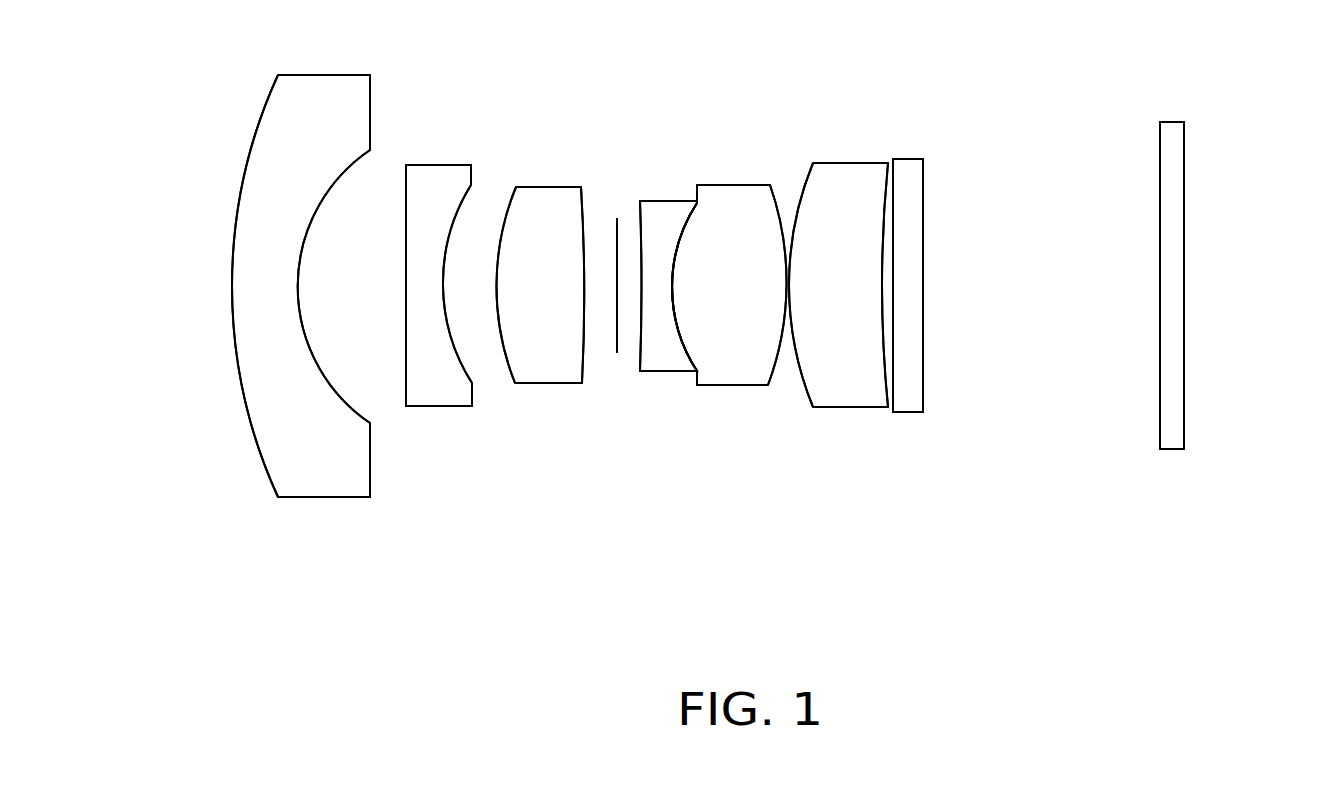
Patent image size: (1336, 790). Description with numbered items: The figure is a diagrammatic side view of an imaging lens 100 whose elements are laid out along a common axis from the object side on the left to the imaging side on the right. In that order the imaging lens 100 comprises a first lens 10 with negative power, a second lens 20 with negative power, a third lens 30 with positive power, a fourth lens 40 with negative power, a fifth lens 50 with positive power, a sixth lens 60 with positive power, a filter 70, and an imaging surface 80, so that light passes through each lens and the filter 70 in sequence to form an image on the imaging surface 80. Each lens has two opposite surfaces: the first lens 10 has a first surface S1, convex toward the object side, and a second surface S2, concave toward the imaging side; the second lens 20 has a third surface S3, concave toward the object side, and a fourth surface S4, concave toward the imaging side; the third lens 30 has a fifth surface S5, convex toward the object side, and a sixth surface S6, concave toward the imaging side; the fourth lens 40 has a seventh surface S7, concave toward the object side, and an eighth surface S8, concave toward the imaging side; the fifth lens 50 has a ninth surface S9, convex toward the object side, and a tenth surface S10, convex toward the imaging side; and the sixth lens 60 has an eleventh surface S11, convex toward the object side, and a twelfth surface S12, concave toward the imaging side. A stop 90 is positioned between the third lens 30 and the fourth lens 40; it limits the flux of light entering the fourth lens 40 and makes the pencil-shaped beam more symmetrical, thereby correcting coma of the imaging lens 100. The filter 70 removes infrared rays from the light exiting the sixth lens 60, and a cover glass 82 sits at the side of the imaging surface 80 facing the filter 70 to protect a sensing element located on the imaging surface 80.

The imaging lens 100 is at (730, 41).
The first lens 10 is at (318, 73).
The second lens 20 is at (432, 165).
The third lens 30 is at (534, 187).
The fourth lens 40 is at (682, 372).
The fifth lens 50 is at (718, 184).
The sixth lens 60 is at (845, 162).
The filter 70 is at (910, 158).
The imaging surface 80 is at (1184, 157).
The cover glass 82 is at (1160, 203).
The stop 90 is at (616, 237).
The first surface S1 is at (240, 380).
The second surface S2 is at (298, 302).
The third surface S3 is at (406, 253).
The fourth surface S4 is at (453, 350).
The fifth surface S5 is at (509, 370).
The sixth surface S6 is at (582, 352).
The seventh surface S7 is at (640, 338).
The eighth surface S8 is at (683, 223).
The ninth surface S9 is at (682, 343).
The tenth surface S10 is at (778, 360).
The eleventh surface S11 is at (805, 190).
The twelfth surface S12 is at (882, 352).